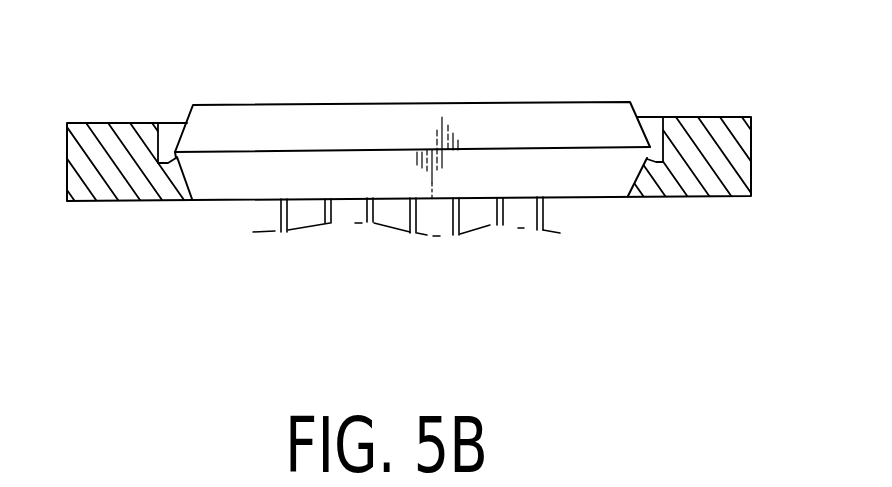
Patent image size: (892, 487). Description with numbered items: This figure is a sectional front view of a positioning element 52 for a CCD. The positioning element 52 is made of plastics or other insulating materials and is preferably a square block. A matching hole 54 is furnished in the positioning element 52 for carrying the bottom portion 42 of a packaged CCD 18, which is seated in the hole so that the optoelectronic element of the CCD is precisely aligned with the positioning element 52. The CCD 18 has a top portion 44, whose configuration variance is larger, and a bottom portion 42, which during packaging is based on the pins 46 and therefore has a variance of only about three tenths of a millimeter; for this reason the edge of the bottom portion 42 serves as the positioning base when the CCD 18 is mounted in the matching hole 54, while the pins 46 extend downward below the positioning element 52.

The packaged CCD 18 is at (391, 163).
The top portion 44 is at (588, 117).
The positioning element 52 is at (707, 137).
The bottom portion 42 is at (222, 190).
The pins 46 is at (540, 227).
The matching hole 54 is at (614, 186).